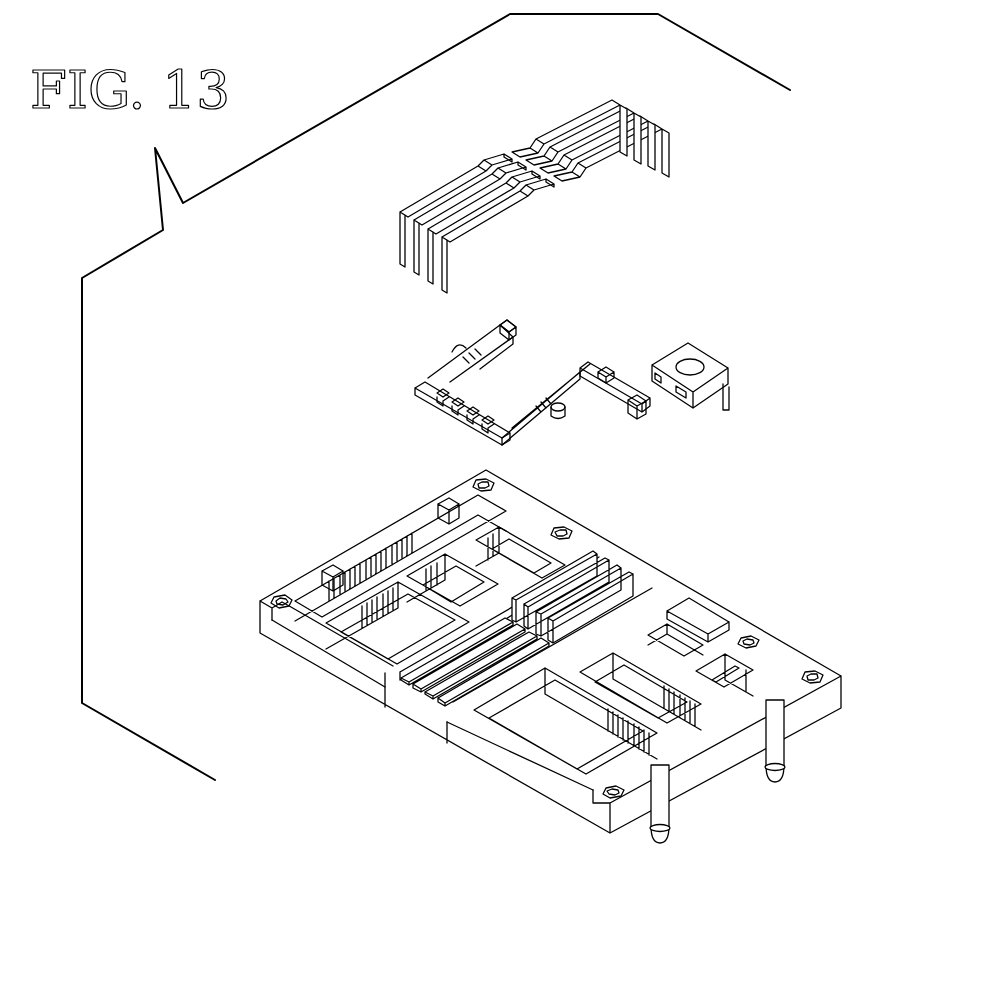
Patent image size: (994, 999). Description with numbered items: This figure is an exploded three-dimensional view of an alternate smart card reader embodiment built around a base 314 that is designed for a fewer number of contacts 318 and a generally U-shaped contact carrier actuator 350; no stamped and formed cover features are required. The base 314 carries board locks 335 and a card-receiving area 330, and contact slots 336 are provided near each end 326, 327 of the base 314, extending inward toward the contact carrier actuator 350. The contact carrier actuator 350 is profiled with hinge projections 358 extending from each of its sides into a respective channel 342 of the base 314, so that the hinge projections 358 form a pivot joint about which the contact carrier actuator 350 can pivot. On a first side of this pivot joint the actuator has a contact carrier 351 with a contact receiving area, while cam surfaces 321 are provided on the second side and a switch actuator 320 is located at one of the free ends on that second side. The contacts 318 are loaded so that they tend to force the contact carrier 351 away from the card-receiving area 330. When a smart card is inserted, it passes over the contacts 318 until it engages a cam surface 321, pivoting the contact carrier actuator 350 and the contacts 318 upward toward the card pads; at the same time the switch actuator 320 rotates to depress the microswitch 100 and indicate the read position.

The microswitch 100 is at (718, 366).
The base 314 is at (790, 655).
The contacts 318 is at (398, 232).
The switch actuator 320 is at (614, 378).
The cam surfaces 321 is at (602, 372).
The end 326 is at (300, 652).
The end 327 is at (732, 617).
The card-receiving area 330 is at (313, 608).
The board locks 335 is at (670, 826).
The contact slots 336 is at (430, 660).
The channel 342 is at (623, 640).
The contact carrier actuator 350 is at (412, 373).
The contact carrier 351 is at (435, 402).
The hinge projections 358 is at (565, 420).